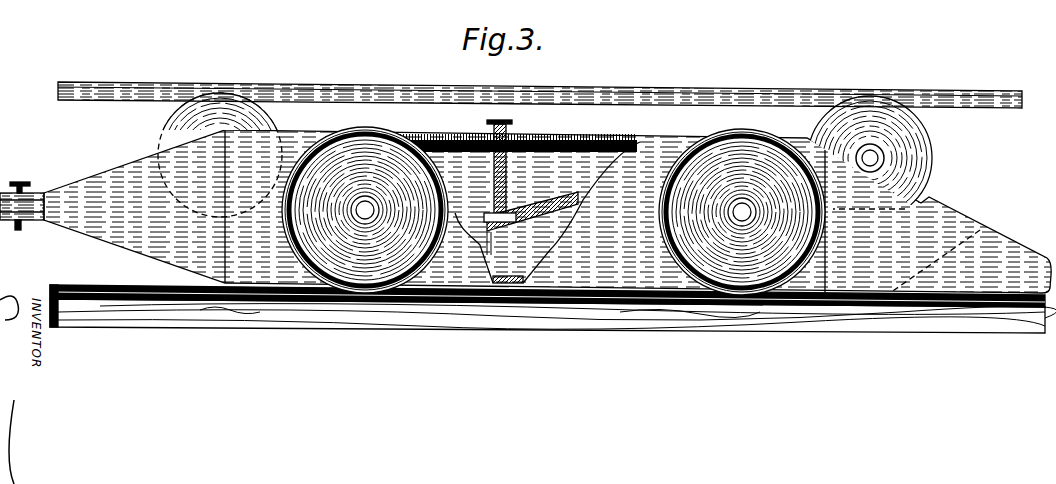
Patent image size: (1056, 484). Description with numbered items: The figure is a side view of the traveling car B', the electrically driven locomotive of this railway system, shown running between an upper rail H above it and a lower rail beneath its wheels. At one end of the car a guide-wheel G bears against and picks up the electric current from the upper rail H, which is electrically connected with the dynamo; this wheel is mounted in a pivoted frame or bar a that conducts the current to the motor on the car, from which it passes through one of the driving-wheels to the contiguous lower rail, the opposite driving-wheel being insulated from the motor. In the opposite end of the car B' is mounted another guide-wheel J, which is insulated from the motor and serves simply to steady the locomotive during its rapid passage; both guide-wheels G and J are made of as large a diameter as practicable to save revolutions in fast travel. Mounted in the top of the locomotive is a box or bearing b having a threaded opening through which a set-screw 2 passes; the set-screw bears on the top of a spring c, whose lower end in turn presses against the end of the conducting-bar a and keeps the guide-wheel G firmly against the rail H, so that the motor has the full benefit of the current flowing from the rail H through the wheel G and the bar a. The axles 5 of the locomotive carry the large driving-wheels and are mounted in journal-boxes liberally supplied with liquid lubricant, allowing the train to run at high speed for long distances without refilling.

The set-screw 2 is at (488, 129).
The axles 5 is at (553, 211).
The pivoted frame or bar a is at (545, 220).
The box or bearing b is at (506, 170).
The spring c is at (490, 207).
The car B' is at (547, 212).
The guide-wheel G is at (912, 140).
The upper rail H is at (686, 98).
The guide-wheel J is at (262, 112).